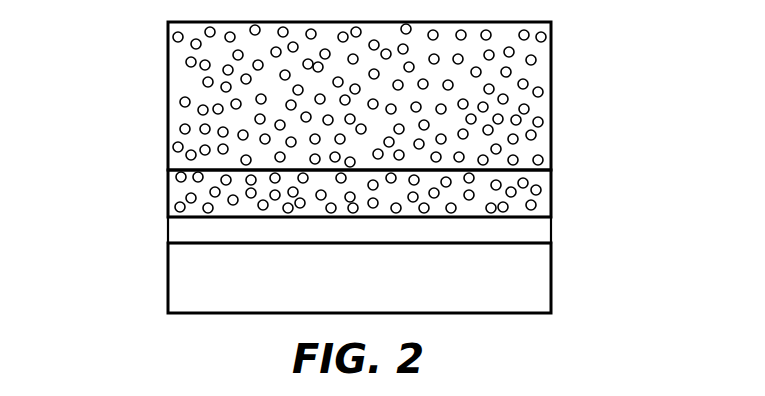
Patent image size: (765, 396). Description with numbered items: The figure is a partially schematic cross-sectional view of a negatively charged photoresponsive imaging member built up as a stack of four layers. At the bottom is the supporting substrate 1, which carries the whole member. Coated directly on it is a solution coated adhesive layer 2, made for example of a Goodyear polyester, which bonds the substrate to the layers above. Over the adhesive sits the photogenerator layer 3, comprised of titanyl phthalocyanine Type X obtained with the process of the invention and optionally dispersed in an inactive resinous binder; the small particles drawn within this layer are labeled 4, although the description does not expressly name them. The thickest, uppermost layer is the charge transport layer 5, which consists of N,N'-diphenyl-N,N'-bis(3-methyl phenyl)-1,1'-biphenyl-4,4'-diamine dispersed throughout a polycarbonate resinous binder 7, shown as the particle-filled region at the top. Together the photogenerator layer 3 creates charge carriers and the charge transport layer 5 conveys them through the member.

The supporting substrate 1 is at (551, 287).
The solution coated adhesive layer 2 is at (551, 232).
The photogenerator layer 3 is at (551, 193).
The particles in lower layer 4 is at (207, 187).
The charge transport layer 5 is at (551, 72).
The polycarbonate resinous binder 7 is at (203, 95).